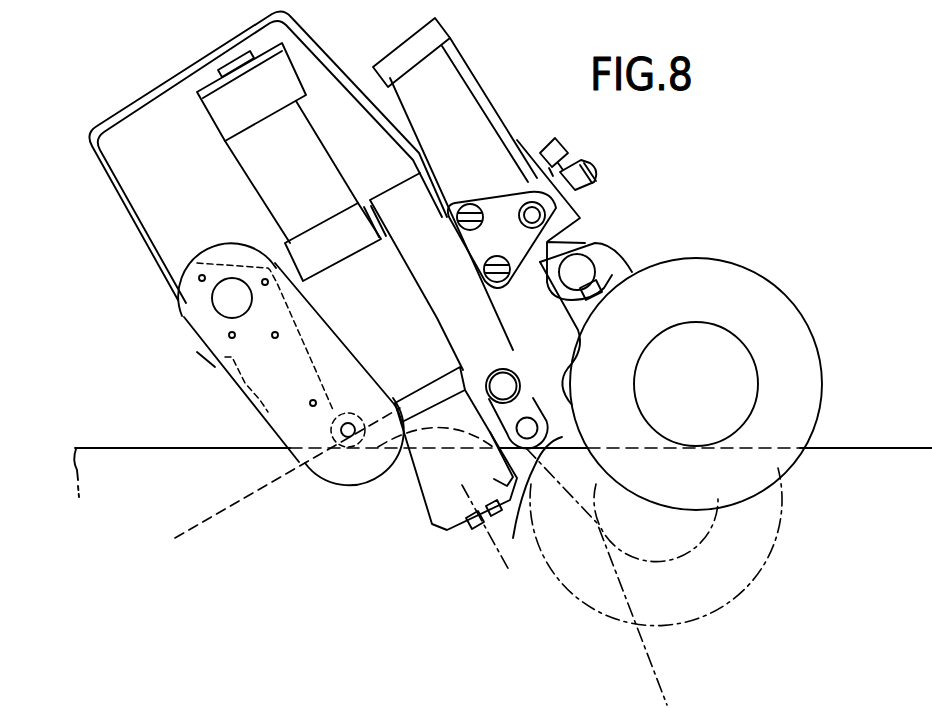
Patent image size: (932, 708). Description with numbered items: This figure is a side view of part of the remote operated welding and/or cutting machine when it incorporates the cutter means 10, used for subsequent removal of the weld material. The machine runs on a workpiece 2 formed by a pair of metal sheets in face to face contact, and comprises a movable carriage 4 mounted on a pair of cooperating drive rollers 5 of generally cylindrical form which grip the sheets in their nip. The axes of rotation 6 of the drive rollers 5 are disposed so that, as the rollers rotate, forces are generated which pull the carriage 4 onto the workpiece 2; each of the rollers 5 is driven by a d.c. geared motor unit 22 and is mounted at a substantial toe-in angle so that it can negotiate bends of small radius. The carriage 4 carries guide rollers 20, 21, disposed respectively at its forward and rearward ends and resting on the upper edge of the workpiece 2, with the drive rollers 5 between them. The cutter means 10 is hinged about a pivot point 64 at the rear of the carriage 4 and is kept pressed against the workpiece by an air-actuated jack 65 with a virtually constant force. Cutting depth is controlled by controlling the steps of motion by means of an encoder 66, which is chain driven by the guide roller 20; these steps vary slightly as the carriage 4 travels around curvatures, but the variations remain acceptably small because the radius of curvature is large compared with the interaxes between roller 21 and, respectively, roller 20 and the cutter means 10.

The workpiece 2 is at (112, 437).
The movable carriage 4 is at (352, 340).
The drive rollers 5 is at (415, 514).
The axes of rotation 6 is at (497, 553).
The cutter means 10 is at (804, 365).
The guide roller 20 is at (328, 428).
The guide roller 21 is at (525, 468).
The d.c. geared motor unit 22 is at (250, 200).
The pivot point 64 is at (511, 362).
The air-actuated jack 65 is at (462, 91).
The encoder 66 is at (215, 308).